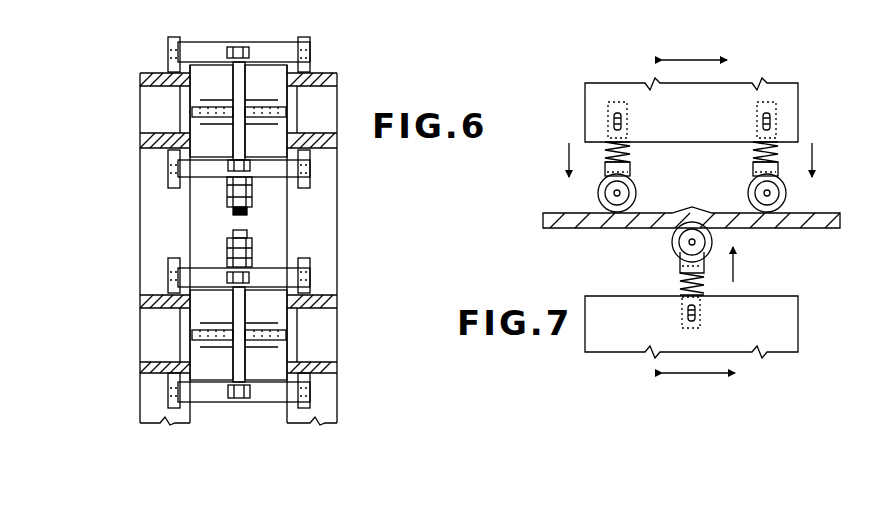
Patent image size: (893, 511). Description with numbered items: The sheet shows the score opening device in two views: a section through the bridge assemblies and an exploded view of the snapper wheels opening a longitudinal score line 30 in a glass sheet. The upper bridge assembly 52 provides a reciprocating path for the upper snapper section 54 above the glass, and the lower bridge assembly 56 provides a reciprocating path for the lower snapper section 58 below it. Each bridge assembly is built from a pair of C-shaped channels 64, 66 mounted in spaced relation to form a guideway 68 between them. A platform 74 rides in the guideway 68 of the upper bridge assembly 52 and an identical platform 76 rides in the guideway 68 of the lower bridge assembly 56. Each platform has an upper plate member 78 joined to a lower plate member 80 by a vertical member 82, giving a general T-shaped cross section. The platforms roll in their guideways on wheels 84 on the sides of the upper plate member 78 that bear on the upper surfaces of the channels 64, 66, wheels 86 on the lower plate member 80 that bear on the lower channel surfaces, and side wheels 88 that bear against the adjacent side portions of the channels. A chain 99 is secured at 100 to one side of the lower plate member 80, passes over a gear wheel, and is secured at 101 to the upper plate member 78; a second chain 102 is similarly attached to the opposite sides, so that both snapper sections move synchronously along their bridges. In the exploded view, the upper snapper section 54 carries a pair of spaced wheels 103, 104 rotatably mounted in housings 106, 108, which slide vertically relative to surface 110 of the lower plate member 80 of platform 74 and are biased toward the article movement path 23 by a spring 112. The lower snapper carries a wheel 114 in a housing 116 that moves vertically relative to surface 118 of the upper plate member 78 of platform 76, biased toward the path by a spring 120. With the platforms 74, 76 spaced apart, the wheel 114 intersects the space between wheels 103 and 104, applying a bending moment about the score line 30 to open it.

In FIG. 7, the article movement path 23 is at (825, 232).
In FIG. 7, the longitudinal score line 30 is at (692, 207).
In FIG. 6, the upper bridge assembly 52 is at (372, 42).
In FIG. 6, the upper snapper section 54 is at (255, 35).
In FIG. 7, the upper snapper section 54 is at (795, 75).
In FIG. 6, the lower bridge assembly 56 is at (340, 245).
In FIG. 7, the lower bridge assembly 56 is at (672, 0).
In FIG. 6, the lower snapper section 58 is at (215, 408).
In FIG. 7, the lower snapper section 58 is at (575, 340).
In FIG. 6, the C-shaped channel 64 is at (340, 75).
In FIG. 6, the C-shaped channel 66 is at (150, 78).
In FIG. 6, the guideway 68 is at (190, 133).
In FIG. 6, the platform 74 is at (236, 38).
In FIG. 7, the platform 74 is at (581, 105).
In FIG. 6, the platform 76 is at (215, 255).
In FIG. 7, the platform 76 is at (578, 296).
In FIG. 6, the upper plate member 78 is at (302, 40).
In FIG. 7, the upper plate member 78 is at (797, 310).
In FIG. 6, the lower plate member 80 is at (285, 180).
In FIG. 7, the lower plate member 80 is at (800, 112).
In FIG. 6, the vertical member 82 is at (233, 88).
In FIG. 6, the wheels 84 is at (172, 40).
In FIG. 6, the wheels 86 is at (172, 160).
In FIG. 6, the side wheels 88 is at (200, 112).
In FIG. 6, the chain 99 is at (245, 47).
In FIG. 6, the chain securing point 100 is at (262, 160).
In FIG. 6, the chain securing point 101 is at (233, 52).
In FIG. 6, the wheel 103 is at (240, 212).
In FIG. 7, the housing 106 is at (598, 188).
In FIG. 7, the housing 108 is at (772, 190).
In FIG. 7, the chain 102 is at (598, 205).
In FIG. 7, the wheel 104 is at (786, 198).
In FIG. 6, the surface 110 is at (190, 180).
In FIG. 7, the surface 110 is at (715, 142).
In FIG. 7, the spring 112 is at (753, 160).
In FIG. 6, the wheel 114 is at (232, 232).
In FIG. 7, the wheel 114 is at (712, 248).
In FIG. 7, the housing 116 is at (680, 250).
In FIG. 6, the surface 118 is at (200, 265).
In FIG. 7, the surface 118 is at (690, 294).
In FIG. 7, the spring 120 is at (683, 272).